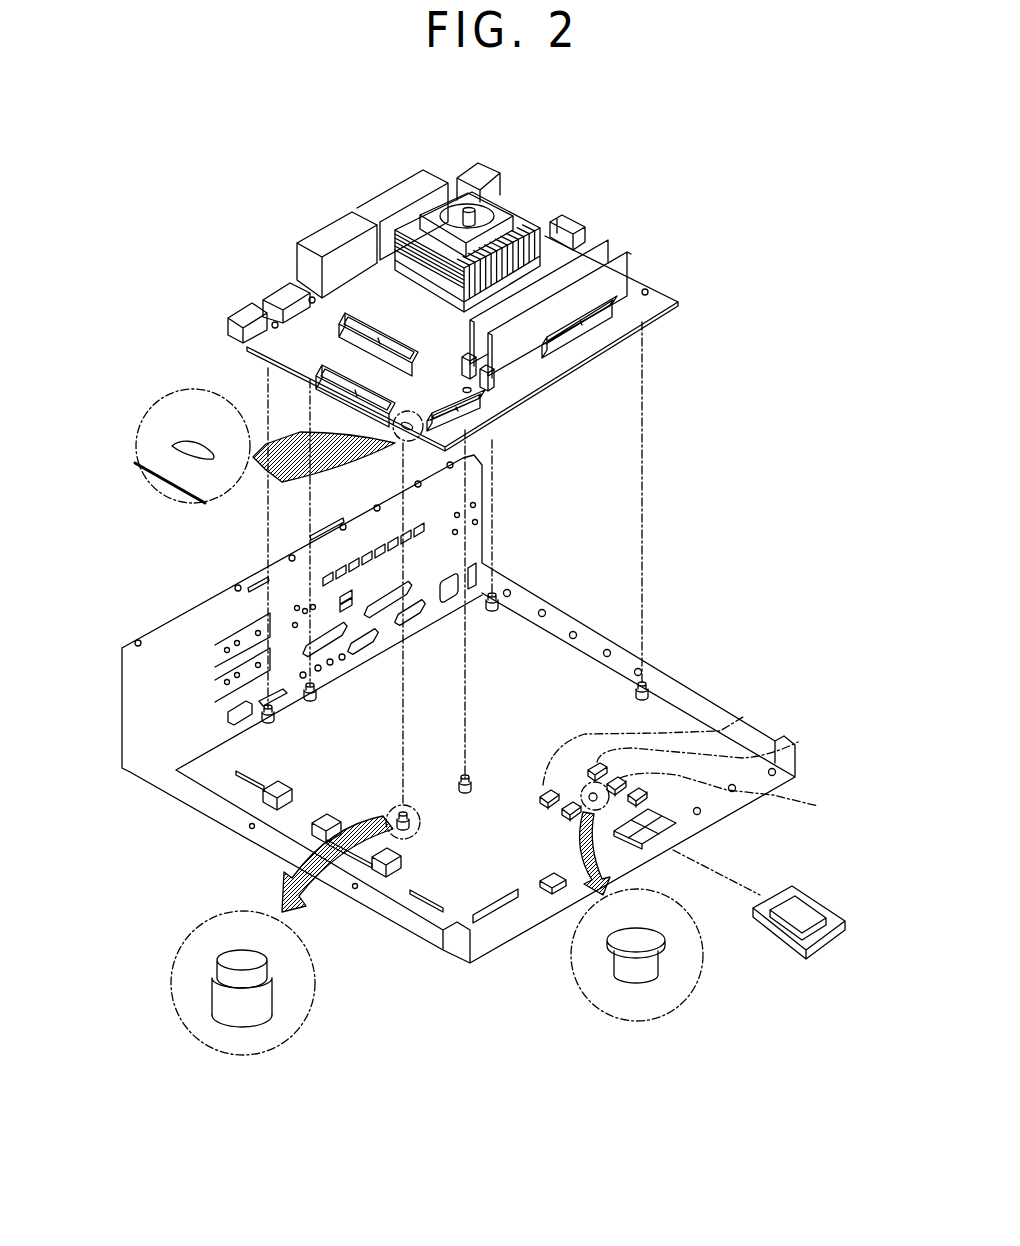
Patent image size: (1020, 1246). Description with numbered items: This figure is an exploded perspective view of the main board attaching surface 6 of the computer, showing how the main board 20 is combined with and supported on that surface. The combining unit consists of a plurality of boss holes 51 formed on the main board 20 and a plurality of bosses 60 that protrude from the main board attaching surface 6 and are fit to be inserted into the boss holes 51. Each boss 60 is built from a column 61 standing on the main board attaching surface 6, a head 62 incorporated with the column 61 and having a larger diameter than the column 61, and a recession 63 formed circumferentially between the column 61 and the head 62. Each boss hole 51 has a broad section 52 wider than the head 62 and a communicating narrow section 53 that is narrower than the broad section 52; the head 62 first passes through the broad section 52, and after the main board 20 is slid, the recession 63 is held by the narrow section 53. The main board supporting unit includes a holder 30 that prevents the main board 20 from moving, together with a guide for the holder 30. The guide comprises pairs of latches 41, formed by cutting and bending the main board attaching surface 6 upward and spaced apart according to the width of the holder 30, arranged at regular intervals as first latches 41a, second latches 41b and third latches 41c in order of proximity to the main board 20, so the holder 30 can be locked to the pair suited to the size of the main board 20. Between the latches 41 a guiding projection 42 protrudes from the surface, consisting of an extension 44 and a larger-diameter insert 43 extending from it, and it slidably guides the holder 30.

The main board 20 is at (673, 292).
The boss hole 51 is at (672, 238).
The broad section 52 is at (273, 425).
The narrow section 53 is at (193, 403).
The main board attaching surface 6 is at (565, 668).
The boss 60 is at (522, 600).
The column 61 is at (192, 996).
The head 62 is at (420, 824).
The recession 63 is at (192, 1031).
The latch 41 is at (817, 698).
The first latch 41a is at (743, 717).
The second latch 41b is at (798, 742).
The third latch 41c is at (818, 806).
The guiding projection 42 is at (600, 1060).
The insert 43 is at (603, 948).
The extension 44 is at (640, 984).
The holder 30 is at (836, 946).